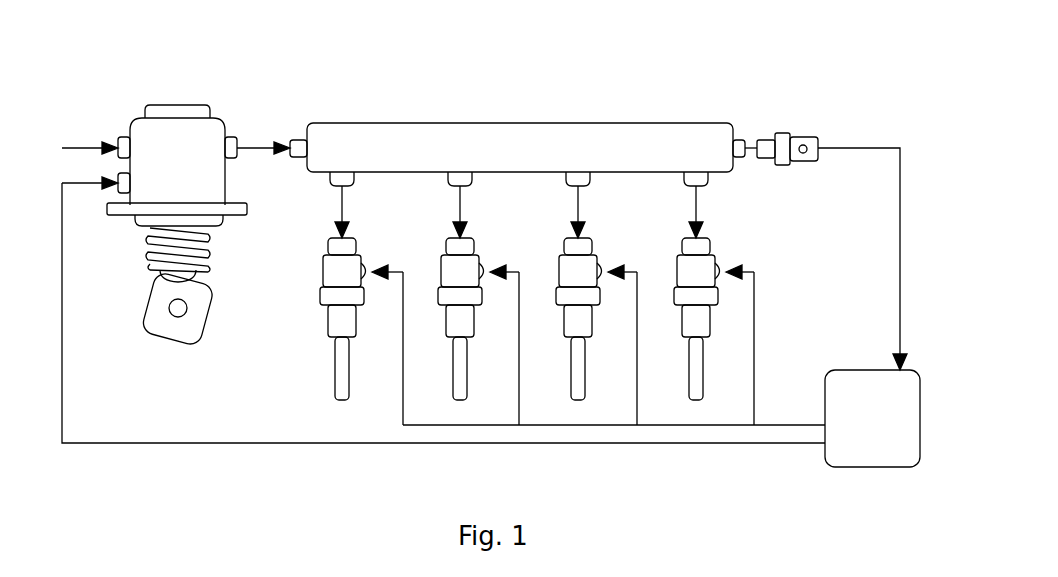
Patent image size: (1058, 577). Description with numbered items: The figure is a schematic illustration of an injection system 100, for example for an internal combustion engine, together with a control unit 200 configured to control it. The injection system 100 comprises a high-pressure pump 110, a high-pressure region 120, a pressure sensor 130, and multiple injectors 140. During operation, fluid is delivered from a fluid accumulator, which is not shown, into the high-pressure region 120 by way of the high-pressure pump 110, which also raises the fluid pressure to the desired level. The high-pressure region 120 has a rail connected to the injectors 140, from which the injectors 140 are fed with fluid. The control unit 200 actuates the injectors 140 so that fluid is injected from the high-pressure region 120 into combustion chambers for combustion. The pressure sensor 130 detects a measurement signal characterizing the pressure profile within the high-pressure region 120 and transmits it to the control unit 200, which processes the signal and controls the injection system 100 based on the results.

The injection system 100 is at (672, 84).
The high-pressure pump 110 is at (177, 144).
The high-pressure region 120 is at (519, 144).
The pressure sensor 130 is at (803, 136).
The injectors 140 is at (333, 385).
The control unit 200 is at (873, 437).